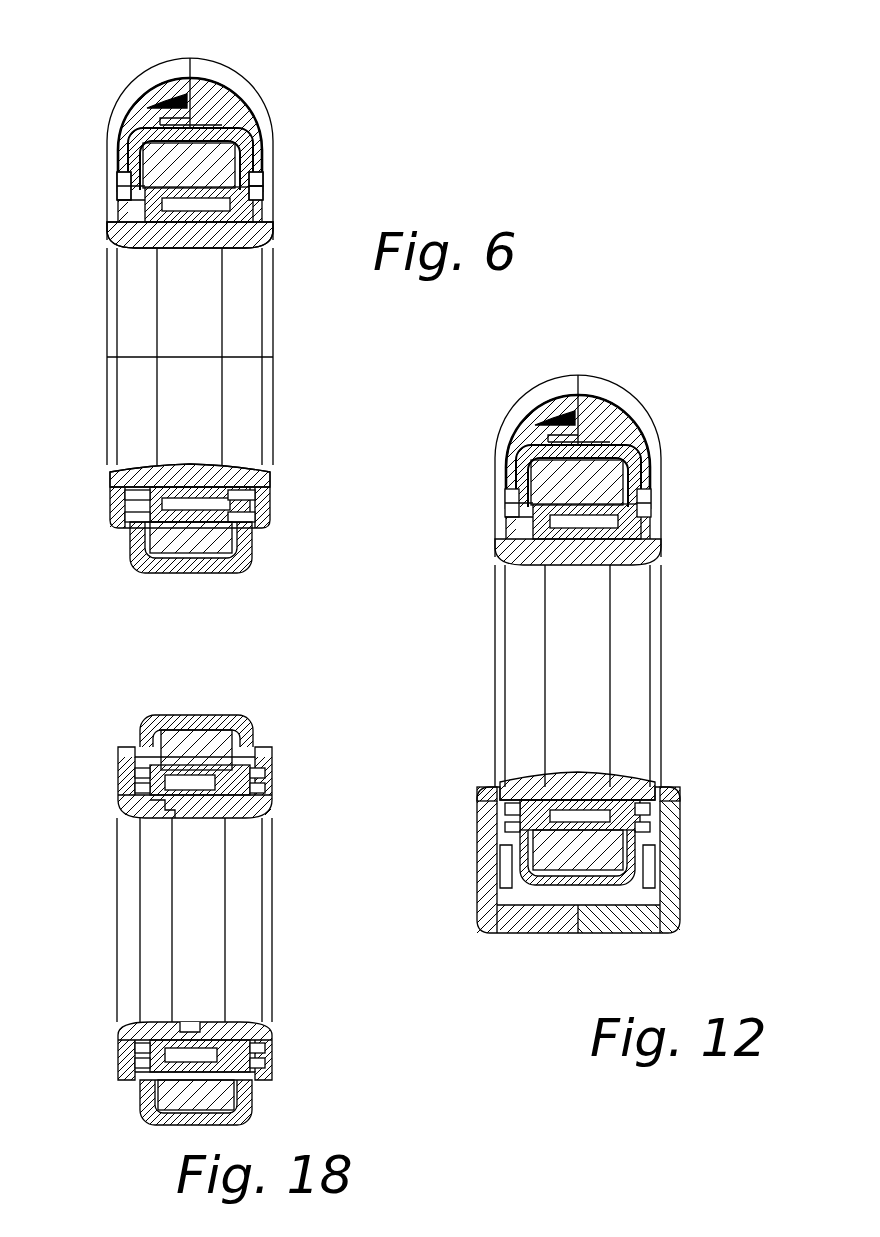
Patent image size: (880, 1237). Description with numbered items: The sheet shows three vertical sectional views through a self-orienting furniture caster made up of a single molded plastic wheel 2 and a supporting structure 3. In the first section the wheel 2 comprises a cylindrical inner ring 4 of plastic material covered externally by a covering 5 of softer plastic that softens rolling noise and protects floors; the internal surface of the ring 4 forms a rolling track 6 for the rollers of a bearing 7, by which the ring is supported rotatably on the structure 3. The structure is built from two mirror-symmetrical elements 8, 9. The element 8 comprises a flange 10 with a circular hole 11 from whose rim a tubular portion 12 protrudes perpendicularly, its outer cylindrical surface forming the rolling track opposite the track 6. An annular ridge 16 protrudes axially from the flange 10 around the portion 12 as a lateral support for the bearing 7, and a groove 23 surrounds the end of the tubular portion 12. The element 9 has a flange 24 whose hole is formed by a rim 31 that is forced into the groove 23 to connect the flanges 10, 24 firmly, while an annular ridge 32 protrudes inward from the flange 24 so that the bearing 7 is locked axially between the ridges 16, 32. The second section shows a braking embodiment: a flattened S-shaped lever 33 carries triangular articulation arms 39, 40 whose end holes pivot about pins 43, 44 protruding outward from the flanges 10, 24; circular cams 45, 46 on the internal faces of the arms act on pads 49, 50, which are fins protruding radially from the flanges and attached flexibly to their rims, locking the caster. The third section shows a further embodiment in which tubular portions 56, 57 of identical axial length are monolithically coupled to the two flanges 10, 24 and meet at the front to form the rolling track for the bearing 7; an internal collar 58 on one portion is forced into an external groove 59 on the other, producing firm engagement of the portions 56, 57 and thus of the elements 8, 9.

In FIG. 6, the wheel 2 is at (151, 582).
In FIG. 18, the wheel 2 is at (227, 711).
In FIG. 6, the supporting structure 3 is at (268, 91).
In FIG. 6, the cylindrical inner ring 4 is at (207, 544).
In FIG. 6, the covering 5 is at (163, 575).
In FIG. 6, the rolling track 6 is at (196, 496).
In FIG. 6, the bearing 7 is at (183, 478).
In FIG. 6, the element 8 is at (206, 347).
In FIG. 12, the element 8 is at (494, 486).
In FIG. 18, the element 8 is at (192, 896).
In FIG. 6, the element 9 is at (276, 326).
In FIG. 12, the element 9 is at (668, 504).
In FIG. 18, the element 9 is at (276, 1051).
In FIG. 6, the flange 10 is at (132, 498).
In FIG. 18, the flange 10 is at (132, 784).
In FIG. 6, the circular hole 11 is at (240, 354).
In FIG. 6, the tubular portion 12 is at (145, 249).
In FIG. 6, the annular ridge 16 is at (128, 203).
In FIG. 6, the groove 23 is at (207, 471).
In FIG. 6, the flange 24 is at (266, 508).
In FIG. 18, the flange 24 is at (262, 773).
In FIG. 6, the rim 31 is at (258, 216).
In FIG. 6, the annular ridge 32 is at (263, 184).
In FIG. 12, the lever 33 is at (594, 861).
In FIG. 12, the articulation arm 39 is at (490, 786).
In FIG. 12, the articulation arm 40 is at (672, 786).
In FIG. 12, the pin 43 is at (488, 818).
In FIG. 12, the pin 44 is at (665, 822).
In FIG. 12, the cam 45 is at (498, 866).
In FIG. 12, the cam 46 is at (672, 869).
In FIG. 12, the pad 49 is at (492, 920).
In FIG. 12, the pad 50 is at (665, 893).
In FIG. 18, the tubular portion 56 is at (160, 813).
In FIG. 18, the tubular portion 57 is at (246, 816).
In FIG. 18, the internal collar 58 is at (200, 1036).
In FIG. 18, the external groove 59 is at (190, 1031).